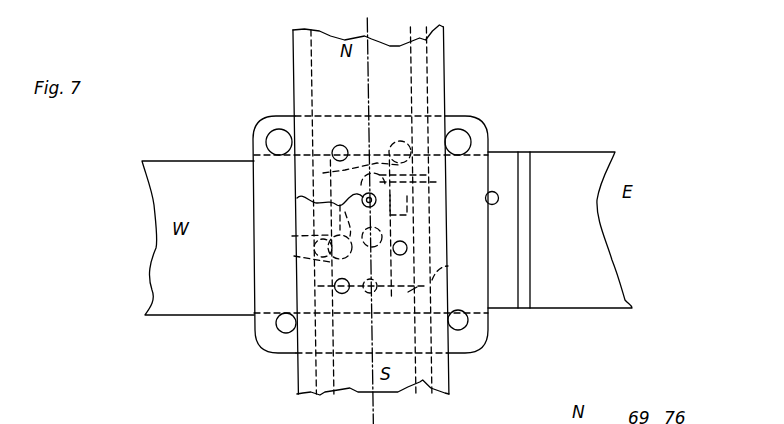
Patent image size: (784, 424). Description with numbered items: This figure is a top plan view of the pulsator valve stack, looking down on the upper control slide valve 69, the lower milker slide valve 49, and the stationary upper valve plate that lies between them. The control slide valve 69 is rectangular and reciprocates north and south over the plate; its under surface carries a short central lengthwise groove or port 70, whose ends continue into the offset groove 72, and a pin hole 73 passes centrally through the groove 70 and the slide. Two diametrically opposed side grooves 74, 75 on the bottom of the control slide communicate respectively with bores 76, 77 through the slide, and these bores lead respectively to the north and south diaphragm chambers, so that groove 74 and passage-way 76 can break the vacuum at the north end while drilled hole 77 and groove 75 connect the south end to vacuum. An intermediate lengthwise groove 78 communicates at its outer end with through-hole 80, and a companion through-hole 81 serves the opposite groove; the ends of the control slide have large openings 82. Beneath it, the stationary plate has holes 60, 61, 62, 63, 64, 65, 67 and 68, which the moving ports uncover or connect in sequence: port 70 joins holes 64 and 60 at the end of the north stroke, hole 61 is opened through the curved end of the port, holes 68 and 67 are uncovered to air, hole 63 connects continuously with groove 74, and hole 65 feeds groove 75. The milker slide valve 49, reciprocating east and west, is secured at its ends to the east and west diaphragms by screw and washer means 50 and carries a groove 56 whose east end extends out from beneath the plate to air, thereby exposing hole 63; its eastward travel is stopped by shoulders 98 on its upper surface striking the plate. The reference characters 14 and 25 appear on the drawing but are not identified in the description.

The bar 14 is at (356, 31).
The bore 76 is at (442, 39).
The large openings 82 is at (395, 62).
The screw hole 25 is at (453, 129).
The screw and washer 50 is at (468, 121).
The groove 56 is at (498, 191).
The slide valve 49 is at (544, 166).
The shoulders 98 is at (530, 181).
The hole 60 is at (268, 176).
The hole 61 is at (340, 170).
The hole 62 is at (340, 180).
The pin hole 73 is at (300, 205).
The hole 64 is at (264, 243).
The side groove 75 is at (283, 235).
The hole 65 is at (279, 258).
The control slide valve 69 is at (306, 370).
The bore 77 is at (320, 382).
The hole 67 is at (342, 294).
The hole 68 is at (378, 300).
The offset groove 72 is at (354, 269).
The lengthwise groove 70 is at (384, 236).
The through-hole 81 is at (352, 140).
The side groove 74 is at (389, 130).
The hole 63 is at (436, 188).
The intermediate lengthwise groove 78 is at (436, 206).
The through-hole 80 is at (407, 244).